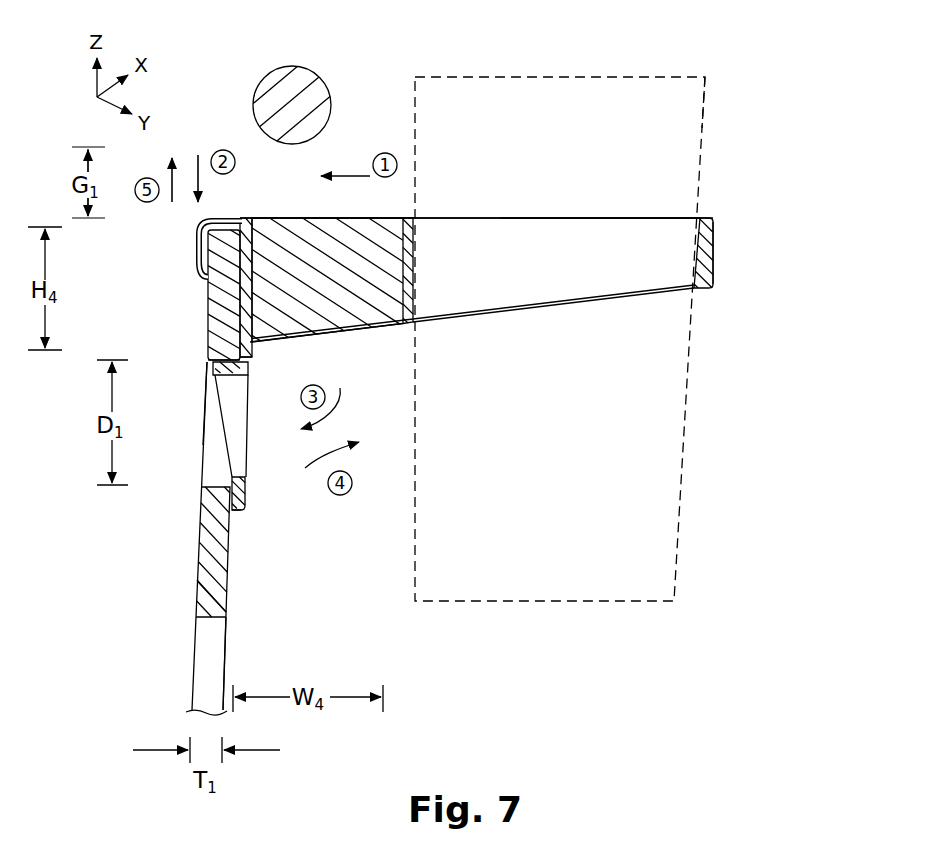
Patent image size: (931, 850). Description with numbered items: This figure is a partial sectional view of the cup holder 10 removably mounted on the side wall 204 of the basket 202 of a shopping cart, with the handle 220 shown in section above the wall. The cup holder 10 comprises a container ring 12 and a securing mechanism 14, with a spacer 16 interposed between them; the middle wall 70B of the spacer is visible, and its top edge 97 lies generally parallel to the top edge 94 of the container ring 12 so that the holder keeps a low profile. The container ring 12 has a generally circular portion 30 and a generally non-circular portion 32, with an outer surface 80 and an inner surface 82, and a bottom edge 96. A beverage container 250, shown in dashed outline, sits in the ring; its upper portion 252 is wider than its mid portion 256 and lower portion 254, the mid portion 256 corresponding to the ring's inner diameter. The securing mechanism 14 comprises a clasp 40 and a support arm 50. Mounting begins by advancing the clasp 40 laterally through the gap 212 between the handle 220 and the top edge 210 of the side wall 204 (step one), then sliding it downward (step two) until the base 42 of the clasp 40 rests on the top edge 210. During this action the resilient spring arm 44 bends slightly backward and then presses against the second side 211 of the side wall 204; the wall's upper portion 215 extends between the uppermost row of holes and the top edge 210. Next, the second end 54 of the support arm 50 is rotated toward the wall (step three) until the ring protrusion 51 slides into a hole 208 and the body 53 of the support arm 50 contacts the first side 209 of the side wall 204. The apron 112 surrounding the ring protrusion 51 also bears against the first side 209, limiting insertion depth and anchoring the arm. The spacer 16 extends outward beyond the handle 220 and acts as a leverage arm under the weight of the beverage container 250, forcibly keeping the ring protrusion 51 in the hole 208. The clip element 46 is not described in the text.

The cup holder 10 is at (399, 349).
The container ring 12 is at (718, 230).
The securing mechanism 14 is at (194, 220).
The spacer 16 is at (318, 349).
The generally circular portion 30 is at (720, 275).
The generally non-circular portion 32 is at (418, 245).
The clasp 40 is at (186, 237).
The base 42 is at (236, 218).
The spring arm 44 is at (194, 247).
The clip lower hook 46 is at (197, 268).
The support arm 50 is at (258, 279).
The ring protrusion 51 is at (205, 379).
The body 53 is at (255, 305).
The second end 54 is at (242, 511).
The wall 70B is at (362, 333).
The outer surface 80 is at (714, 250).
The inner surface 82 is at (536, 269).
The top edge 94 is at (614, 218).
The bottom edge 96 is at (545, 312).
The top edge 97 is at (345, 218).
The apron 112 is at (249, 492).
The basket 202 is at (193, 508).
The side wall 204 is at (198, 560).
The hole 208 is at (203, 477).
The first side 209 is at (228, 590).
The top edge 210 is at (245, 218).
The second side 211 is at (207, 308).
The gap 212 is at (288, 165).
The upper portion 215 is at (207, 335).
The handle 220 is at (305, 85).
The beverage container 250 is at (718, 111).
The upper portion 252 is at (702, 145).
The lower portion 254 is at (683, 447).
The mid portion 256 is at (689, 358).